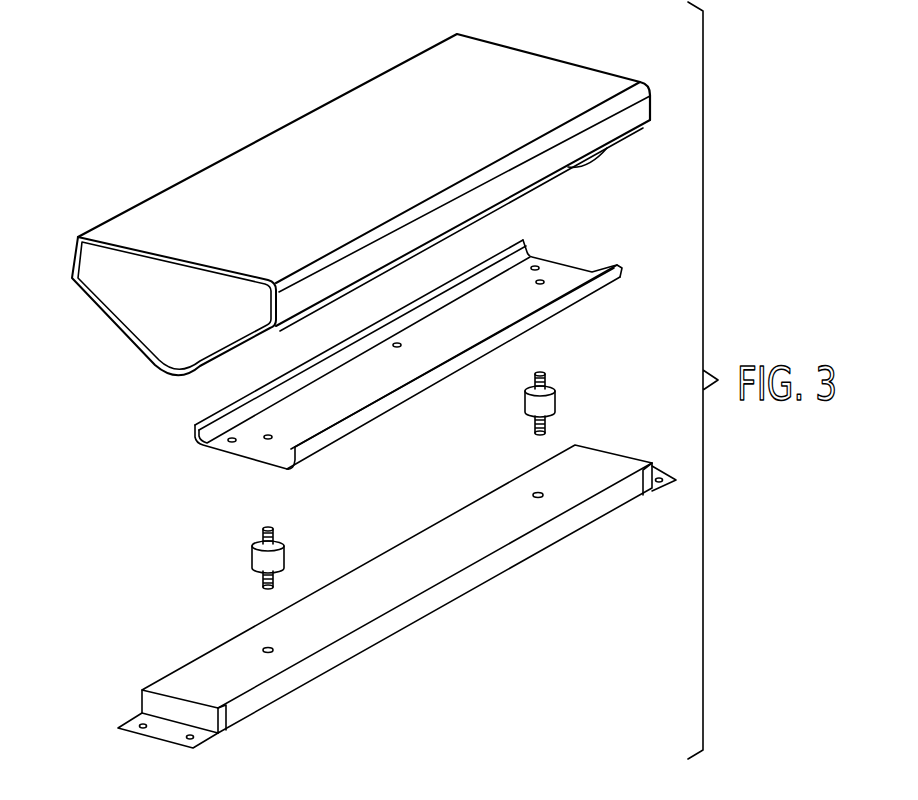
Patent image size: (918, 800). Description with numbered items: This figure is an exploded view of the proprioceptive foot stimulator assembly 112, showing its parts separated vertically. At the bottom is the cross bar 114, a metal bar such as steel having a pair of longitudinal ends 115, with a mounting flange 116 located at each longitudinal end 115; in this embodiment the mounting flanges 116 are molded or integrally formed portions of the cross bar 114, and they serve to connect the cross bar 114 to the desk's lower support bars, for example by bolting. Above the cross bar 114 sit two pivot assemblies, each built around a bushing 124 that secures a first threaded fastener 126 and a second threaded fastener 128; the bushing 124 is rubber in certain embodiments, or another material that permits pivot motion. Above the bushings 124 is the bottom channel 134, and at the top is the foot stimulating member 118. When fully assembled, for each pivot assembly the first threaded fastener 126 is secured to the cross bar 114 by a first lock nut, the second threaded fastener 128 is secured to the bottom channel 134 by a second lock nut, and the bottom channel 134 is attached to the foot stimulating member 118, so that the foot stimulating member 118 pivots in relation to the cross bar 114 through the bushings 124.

The proprioceptive foot stimulator assembly 112 is at (361, 405).
The cross bar 114 is at (385, 600).
The longitudinal ends 115 is at (195, 675).
The mounting flange 116 is at (168, 733).
The foot stimulating member 118 is at (533, 70).
The bushing 124 is at (557, 400).
The first threaded fastener 126 is at (535, 428).
The second threaded fastener 128 is at (541, 373).
The bottom channel 134 is at (558, 278).